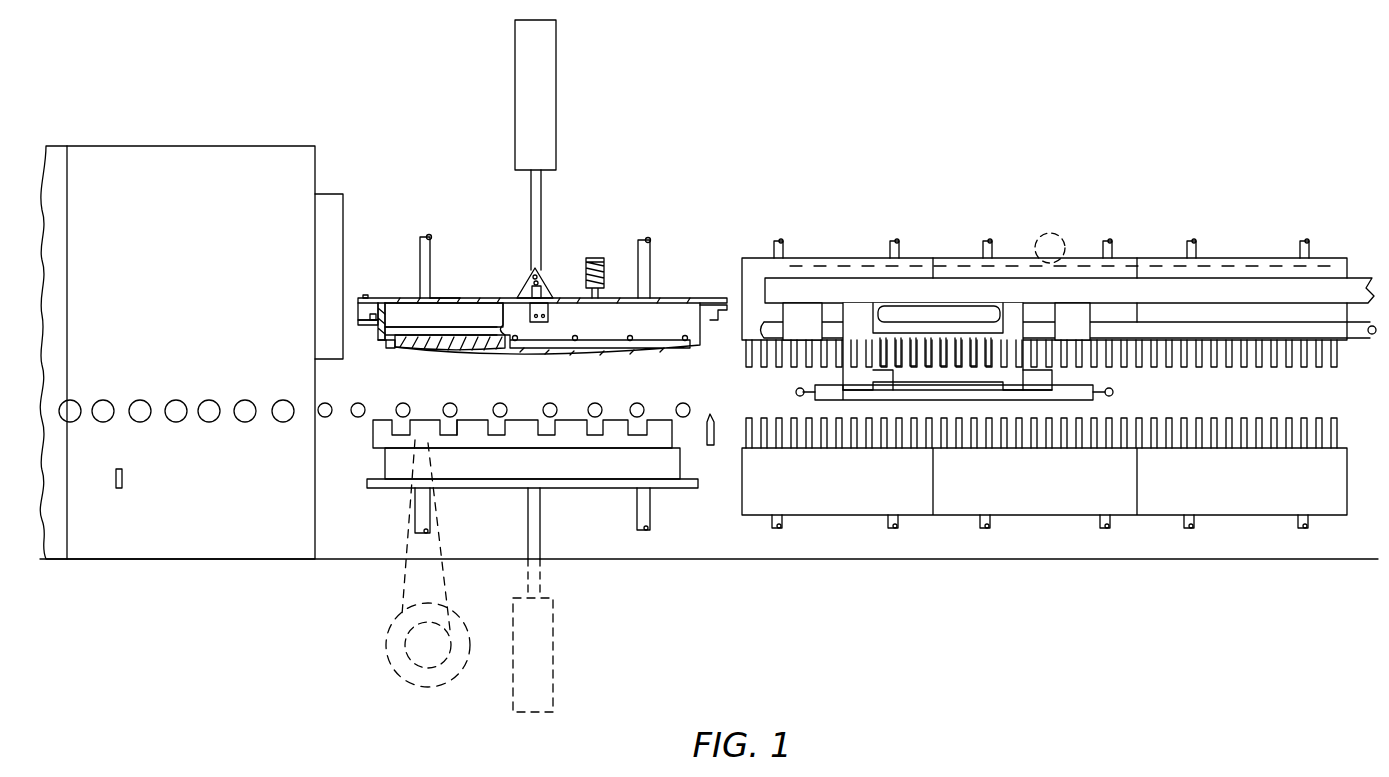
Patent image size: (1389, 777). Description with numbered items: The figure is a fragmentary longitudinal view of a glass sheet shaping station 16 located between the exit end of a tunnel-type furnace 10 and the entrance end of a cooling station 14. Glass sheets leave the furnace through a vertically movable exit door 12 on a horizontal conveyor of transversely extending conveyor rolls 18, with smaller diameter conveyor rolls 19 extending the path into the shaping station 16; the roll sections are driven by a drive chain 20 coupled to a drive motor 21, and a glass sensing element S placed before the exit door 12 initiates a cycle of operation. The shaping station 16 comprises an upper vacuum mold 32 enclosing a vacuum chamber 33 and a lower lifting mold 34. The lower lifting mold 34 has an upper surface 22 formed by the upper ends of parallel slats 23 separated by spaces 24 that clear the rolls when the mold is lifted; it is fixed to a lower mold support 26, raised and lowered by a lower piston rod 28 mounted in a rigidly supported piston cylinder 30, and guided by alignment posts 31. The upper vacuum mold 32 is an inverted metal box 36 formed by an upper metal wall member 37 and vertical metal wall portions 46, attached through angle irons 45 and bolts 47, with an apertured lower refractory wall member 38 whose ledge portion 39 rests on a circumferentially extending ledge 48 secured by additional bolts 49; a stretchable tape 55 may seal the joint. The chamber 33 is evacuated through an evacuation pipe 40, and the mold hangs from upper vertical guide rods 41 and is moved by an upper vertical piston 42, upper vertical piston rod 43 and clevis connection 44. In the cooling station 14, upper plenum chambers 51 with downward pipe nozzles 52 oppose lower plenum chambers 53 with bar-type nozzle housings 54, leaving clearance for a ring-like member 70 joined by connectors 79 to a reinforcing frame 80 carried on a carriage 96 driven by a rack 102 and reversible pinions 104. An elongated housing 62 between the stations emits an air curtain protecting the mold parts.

The tunnel-type furnace 10 is at (250, 138).
The exit door 12 is at (330, 192).
The cooling station 14 is at (922, 238).
The shaping station 16 is at (585, 188).
The conveyor rolls 18 is at (209, 400).
The smaller diameter conveyor rolls 19 is at (635, 403).
The drive chain 20 is at (398, 578).
The drive motor 21 is at (390, 640).
The upper surface 22 is at (440, 420).
The slats 23 is at (460, 436).
The spaces 24 is at (505, 420).
The lower mold support 26 is at (590, 488).
The lower piston rod 28 is at (540, 530).
The piston cylinder 30 is at (556, 625).
The alignment posts 31 is at (430, 500).
The upper vacuum mold 32 is at (690, 354).
The vacuum chamber 33 is at (475, 312).
The lower lifting mold 34 is at (358, 441).
The inverted metal box 36 is at (447, 298).
The upper metal wall member 37 is at (385, 305).
The lower refractory wall member 38 is at (455, 352).
The ledge portion 39 is at (392, 312).
The evacuation pipe 40 is at (590, 262).
The upper vertical guide rods 41 is at (420, 245).
The upper vertical piston 42 is at (515, 64).
The upper vertical piston rod 43 is at (531, 180).
The clevis connection 44 is at (527, 282).
The angle irons 45 is at (358, 318).
The vertical metal wall portions 46 is at (383, 342).
The bolts 47 is at (363, 296).
The circumferentially extending ledge 48 is at (362, 352).
The additional bolts 49 is at (370, 318).
The upper plenum chambers 51 is at (812, 256).
The pipe nozzles 52 is at (1330, 366).
The lower plenum chamber 53 is at (1150, 515).
The bar-type nozzle housings 54 is at (1230, 418).
The stretchable tape 55 is at (388, 346).
The elongated housing 62 is at (707, 440).
The ring-like member 70 is at (935, 395).
The connectors 79 is at (1095, 395).
The reinforcing frame 80 is at (1114, 392).
The carriage 96 is at (1018, 330).
The rack 102 is at (1262, 265).
The reversible pinions 104 is at (1050, 233).
The glass sensing element S is at (116, 478).